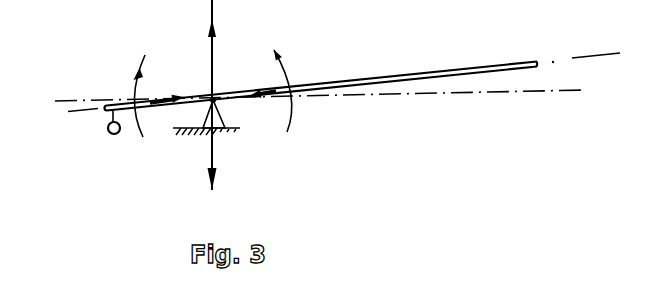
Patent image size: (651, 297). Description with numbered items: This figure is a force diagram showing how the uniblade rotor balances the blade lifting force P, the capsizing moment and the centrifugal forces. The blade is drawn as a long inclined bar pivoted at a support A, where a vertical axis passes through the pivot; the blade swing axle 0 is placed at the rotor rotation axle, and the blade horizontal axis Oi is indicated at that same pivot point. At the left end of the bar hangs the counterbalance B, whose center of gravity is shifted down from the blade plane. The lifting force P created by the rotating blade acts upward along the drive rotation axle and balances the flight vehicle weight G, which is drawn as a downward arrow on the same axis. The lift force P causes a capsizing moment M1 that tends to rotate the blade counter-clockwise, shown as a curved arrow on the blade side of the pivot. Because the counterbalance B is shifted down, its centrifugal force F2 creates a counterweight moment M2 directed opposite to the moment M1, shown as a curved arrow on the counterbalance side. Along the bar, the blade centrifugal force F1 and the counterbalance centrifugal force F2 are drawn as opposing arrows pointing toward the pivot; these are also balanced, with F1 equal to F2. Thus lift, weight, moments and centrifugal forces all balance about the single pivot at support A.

The blade lifting force P is at (226, 50).
The flight vehicle weight G is at (226, 166).
The pivot support A is at (210, 117).
The counterbalance B is at (102, 128).
The blade centrifugal force F1 is at (261, 77).
The counterbalance centrifugal force F2 is at (169, 80).
The capsizing moment M1 is at (304, 85).
The counterweight moment M2 is at (118, 92).
The blade horizontal axis Oi is at (211, 101).
The blade swing axle 0 is at (217, 150).